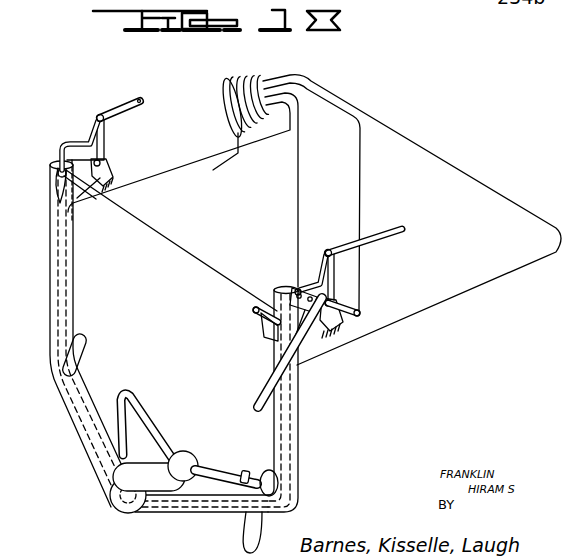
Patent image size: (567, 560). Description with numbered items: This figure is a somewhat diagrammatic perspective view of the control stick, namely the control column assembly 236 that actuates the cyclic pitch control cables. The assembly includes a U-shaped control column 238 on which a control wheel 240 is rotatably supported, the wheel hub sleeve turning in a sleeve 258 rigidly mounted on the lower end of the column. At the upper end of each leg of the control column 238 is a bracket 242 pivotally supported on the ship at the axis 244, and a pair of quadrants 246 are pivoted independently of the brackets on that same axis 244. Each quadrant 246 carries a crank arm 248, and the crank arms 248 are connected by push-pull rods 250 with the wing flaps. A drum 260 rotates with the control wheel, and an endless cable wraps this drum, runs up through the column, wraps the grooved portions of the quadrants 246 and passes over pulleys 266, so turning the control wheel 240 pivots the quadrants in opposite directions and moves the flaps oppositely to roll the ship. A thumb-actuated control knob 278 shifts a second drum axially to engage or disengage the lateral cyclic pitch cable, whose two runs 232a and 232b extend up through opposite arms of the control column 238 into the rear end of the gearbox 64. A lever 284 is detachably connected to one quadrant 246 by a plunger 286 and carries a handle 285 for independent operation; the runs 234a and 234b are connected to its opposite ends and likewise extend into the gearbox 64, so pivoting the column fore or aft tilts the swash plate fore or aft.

The gearbox 64 is at (223, 72).
The drum 260 is at (140, 100).
The quadrant 246 is at (80, 147).
The crank arm 248 is at (115, 129).
The pivot axis 244 is at (110, 163).
The bracket 242 is at (70, 186).
The control cable run 232a is at (512, 181).
The control cable run 232b is at (192, 173).
The control cable run 234a is at (362, 220).
The control cable run 234b is at (300, 231).
The plunger 286 is at (296, 289).
The push-pull rod 250 is at (385, 243).
The lever 284 is at (358, 305).
The pulley 266 is at (255, 314).
The handle 285 is at (295, 358).
The control column assembly 236 is at (302, 452).
The control wheel 240 is at (167, 450).
The control knob 278 is at (247, 471).
The sleeve 258 is at (121, 481).
The control column 238 is at (223, 504).